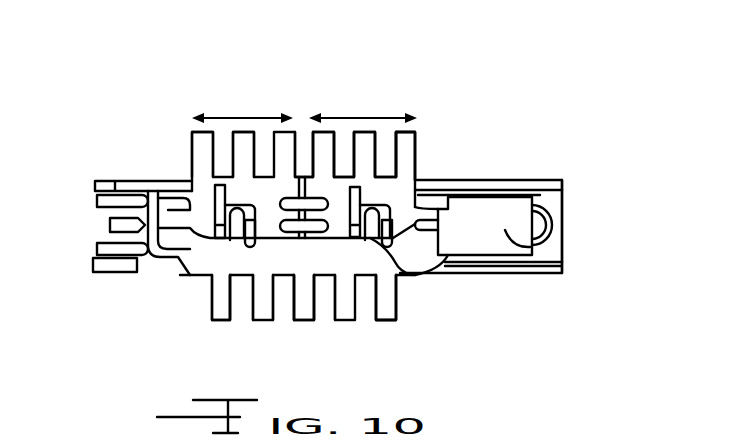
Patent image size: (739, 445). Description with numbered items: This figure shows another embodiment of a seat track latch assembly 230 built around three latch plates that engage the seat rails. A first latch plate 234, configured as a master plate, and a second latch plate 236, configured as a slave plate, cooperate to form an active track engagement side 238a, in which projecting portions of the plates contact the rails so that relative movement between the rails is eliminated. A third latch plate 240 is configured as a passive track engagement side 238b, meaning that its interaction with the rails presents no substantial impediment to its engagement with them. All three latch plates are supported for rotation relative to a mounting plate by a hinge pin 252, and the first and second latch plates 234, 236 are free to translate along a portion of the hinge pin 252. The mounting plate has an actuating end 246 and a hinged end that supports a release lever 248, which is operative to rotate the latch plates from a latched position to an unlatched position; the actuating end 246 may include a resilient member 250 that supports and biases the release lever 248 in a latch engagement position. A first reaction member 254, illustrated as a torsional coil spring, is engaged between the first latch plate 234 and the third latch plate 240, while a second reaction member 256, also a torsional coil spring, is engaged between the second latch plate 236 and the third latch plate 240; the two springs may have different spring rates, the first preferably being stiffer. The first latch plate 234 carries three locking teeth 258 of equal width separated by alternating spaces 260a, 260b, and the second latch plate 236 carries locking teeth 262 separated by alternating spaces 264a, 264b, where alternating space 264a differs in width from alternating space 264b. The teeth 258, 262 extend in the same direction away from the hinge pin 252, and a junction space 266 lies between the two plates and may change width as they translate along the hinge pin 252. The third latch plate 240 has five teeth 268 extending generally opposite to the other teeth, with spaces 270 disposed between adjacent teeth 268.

The seat track latch assembly 230 is at (478, 128).
The first latch plate 234 is at (190, 190).
The second latch plate 236 is at (403, 179).
The active track engagement side 238a is at (448, 80).
The passive track engagement side 238b is at (403, 311).
The third latch plate 240 is at (197, 253).
The actuating end 246 is at (562, 259).
The release lever 248 is at (540, 180).
The resilient member 250 is at (562, 220).
The hinge pin 252 is at (110, 221).
The first reaction member 254 is at (237, 244).
The second reaction member 256 is at (400, 276).
The locking teeth 258 is at (232, 133).
The alternating space 260a is at (220, 133).
The alternating space 260b is at (262, 133).
The locking teeth 262 is at (332, 133).
The alternating space 264a is at (343, 133).
The alternating space 264b is at (388, 133).
The junction space 266 is at (298, 143).
The teeth 268 is at (222, 293).
The spaces 270 is at (240, 313).